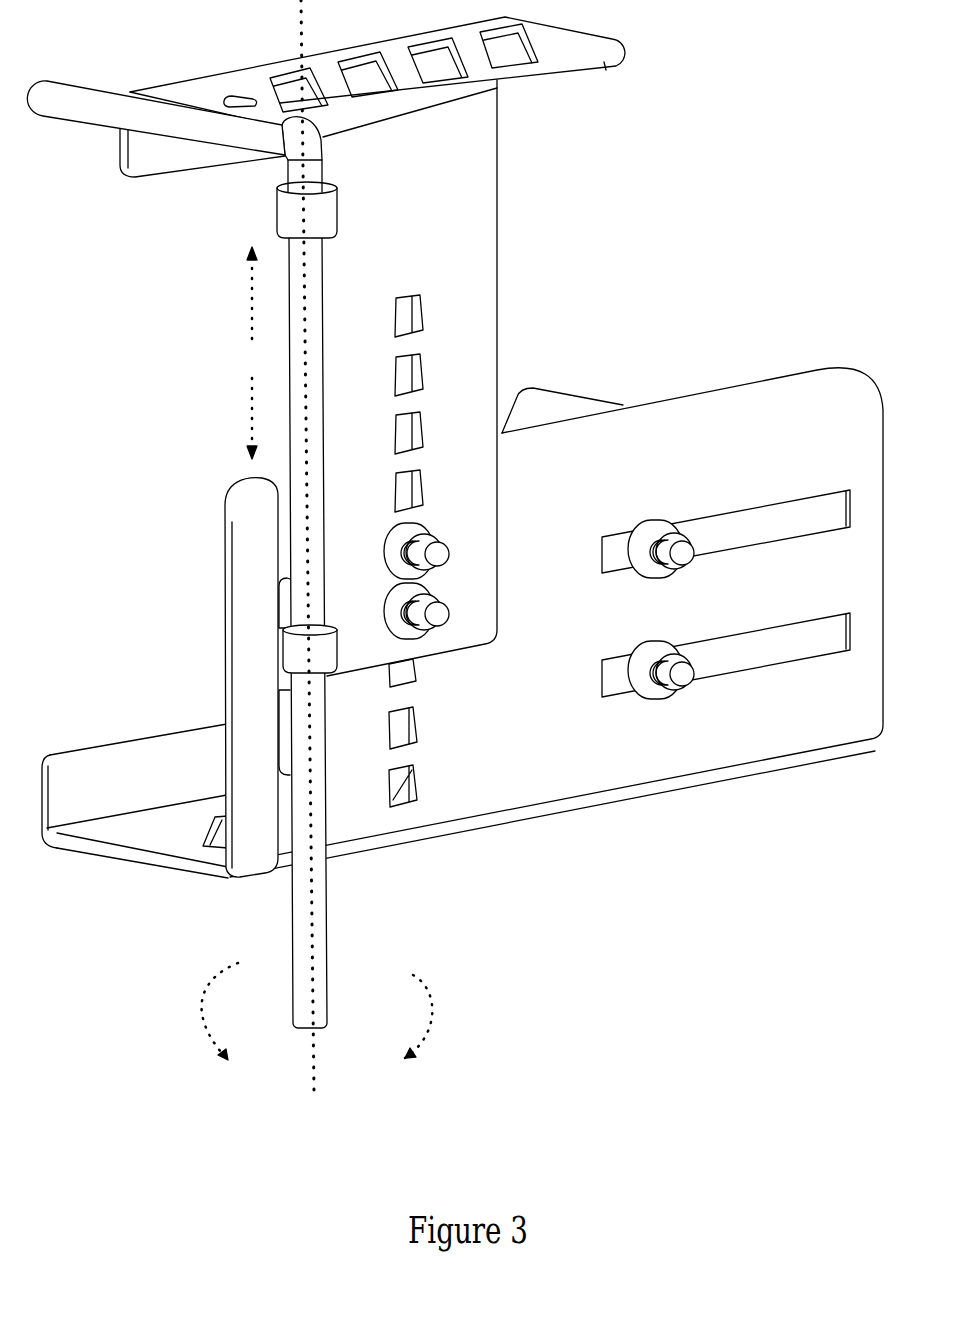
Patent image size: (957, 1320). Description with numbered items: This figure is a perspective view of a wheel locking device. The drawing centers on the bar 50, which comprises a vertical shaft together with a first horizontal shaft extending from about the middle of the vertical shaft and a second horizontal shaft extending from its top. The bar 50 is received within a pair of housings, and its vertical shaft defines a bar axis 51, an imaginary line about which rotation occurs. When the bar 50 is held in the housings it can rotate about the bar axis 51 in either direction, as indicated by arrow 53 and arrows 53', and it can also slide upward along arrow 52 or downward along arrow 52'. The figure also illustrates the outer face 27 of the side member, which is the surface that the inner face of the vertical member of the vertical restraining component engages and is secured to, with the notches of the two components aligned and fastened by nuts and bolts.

The outer face 27 is at (547, 722).
The bar 50 is at (102, 107).
The bar axis 51 is at (303, 33).
The arrow 52 is at (207, 297).
The arrow 52' is at (207, 418).
The arrow 53 is at (169, 1011).
The arrows 53' is at (468, 1016).